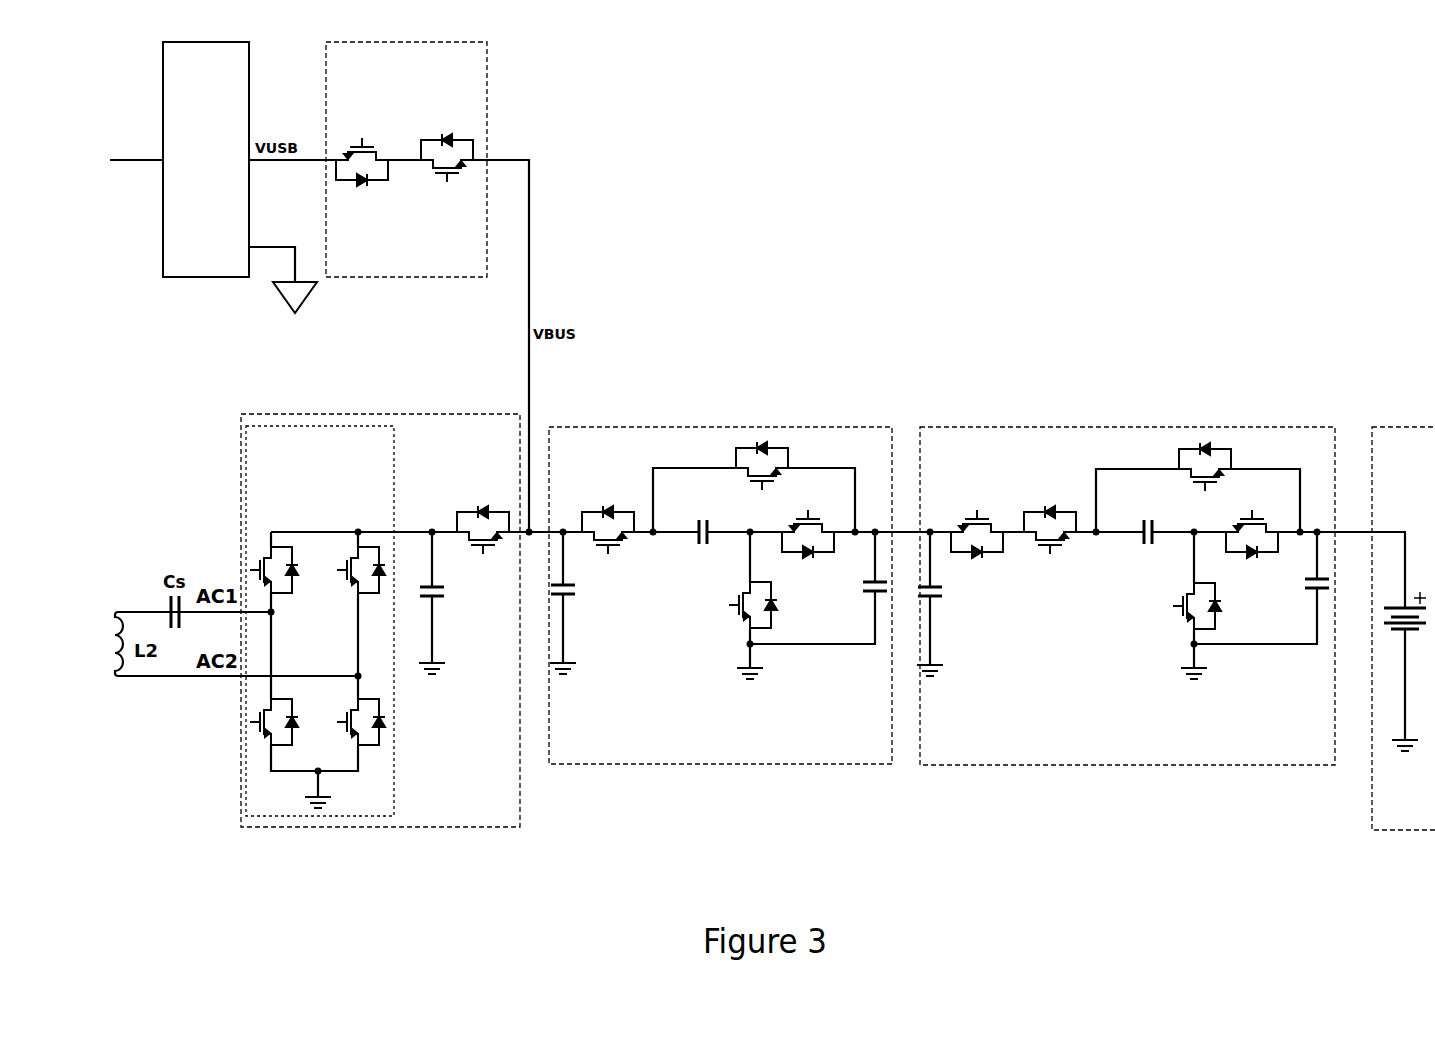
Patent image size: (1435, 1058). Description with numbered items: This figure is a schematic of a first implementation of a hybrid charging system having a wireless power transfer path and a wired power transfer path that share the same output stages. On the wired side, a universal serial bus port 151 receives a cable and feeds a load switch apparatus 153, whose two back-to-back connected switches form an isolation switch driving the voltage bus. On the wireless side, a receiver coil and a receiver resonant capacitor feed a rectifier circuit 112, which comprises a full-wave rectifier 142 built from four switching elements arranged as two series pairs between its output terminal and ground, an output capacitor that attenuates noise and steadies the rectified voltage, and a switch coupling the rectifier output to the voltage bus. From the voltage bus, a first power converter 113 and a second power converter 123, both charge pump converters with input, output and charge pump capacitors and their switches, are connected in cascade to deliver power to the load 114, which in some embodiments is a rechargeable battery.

The universal serial bus (USB) port 151 is at (200, 278).
The load switch apparatus 153 is at (472, 268).
The rectifier 142 is at (381, 463).
The rectifier circuit 112 is at (413, 620).
The first power converter 113 is at (881, 753).
The second power converter 123 is at (1329, 755).
The load 114 is at (1434, 815).